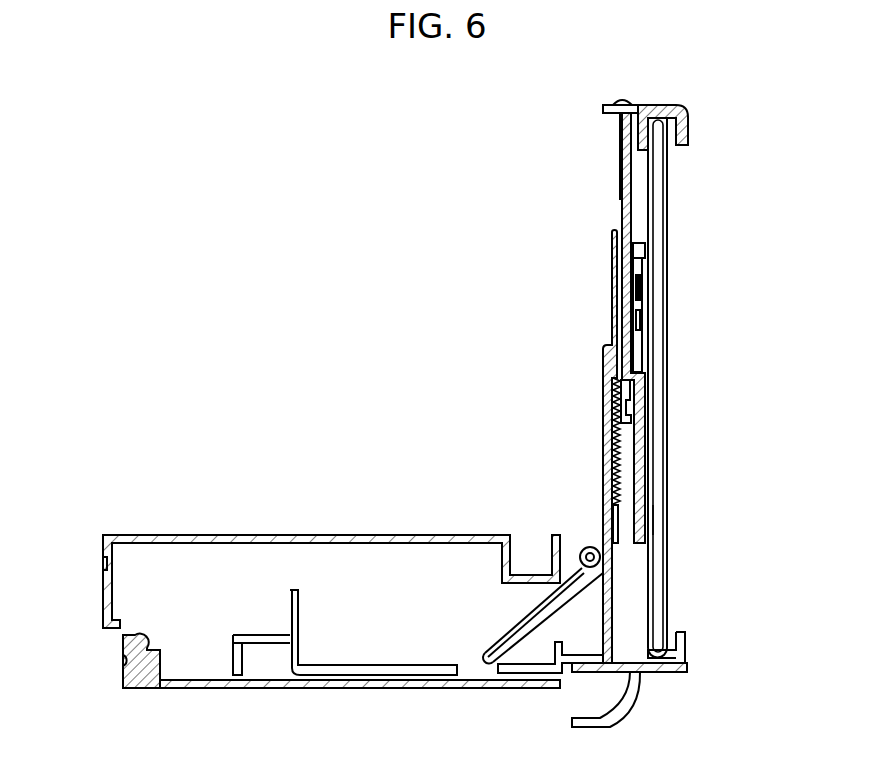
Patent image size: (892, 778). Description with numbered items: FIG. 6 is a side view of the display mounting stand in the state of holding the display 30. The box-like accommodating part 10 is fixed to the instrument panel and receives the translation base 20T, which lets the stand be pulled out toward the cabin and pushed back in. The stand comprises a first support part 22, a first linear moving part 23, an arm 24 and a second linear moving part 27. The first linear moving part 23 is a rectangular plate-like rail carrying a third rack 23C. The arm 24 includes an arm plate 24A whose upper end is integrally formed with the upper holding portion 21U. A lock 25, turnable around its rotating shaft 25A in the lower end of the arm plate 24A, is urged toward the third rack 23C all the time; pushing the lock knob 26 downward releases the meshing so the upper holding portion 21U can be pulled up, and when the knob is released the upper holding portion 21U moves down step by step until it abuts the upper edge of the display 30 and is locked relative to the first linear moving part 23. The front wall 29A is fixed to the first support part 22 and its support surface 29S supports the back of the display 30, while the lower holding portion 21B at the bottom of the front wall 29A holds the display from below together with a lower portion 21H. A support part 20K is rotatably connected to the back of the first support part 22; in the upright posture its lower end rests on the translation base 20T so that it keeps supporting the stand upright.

The accommodating part 10 is at (405, 535).
The translation base 20T is at (350, 665).
The support part 20K is at (500, 636).
The upper holding portion 21U is at (688, 125).
The lower holding portion 21B is at (686, 658).
The leg portion 21H is at (628, 727).
The first support part 22 is at (603, 512).
The first linear moving part 23 is at (611, 270).
The third rack 23C is at (604, 474).
The arm 24 is at (643, 218).
The arm plate 24A is at (640, 250).
The lock 25 is at (612, 440).
The rotating shaft 25A is at (614, 392).
The lock knob 26 is at (613, 105).
The second linear moving part 27 is at (645, 314).
The front wall 29A is at (655, 521).
The support surface 29S is at (655, 578).
The display 30 is at (667, 458).